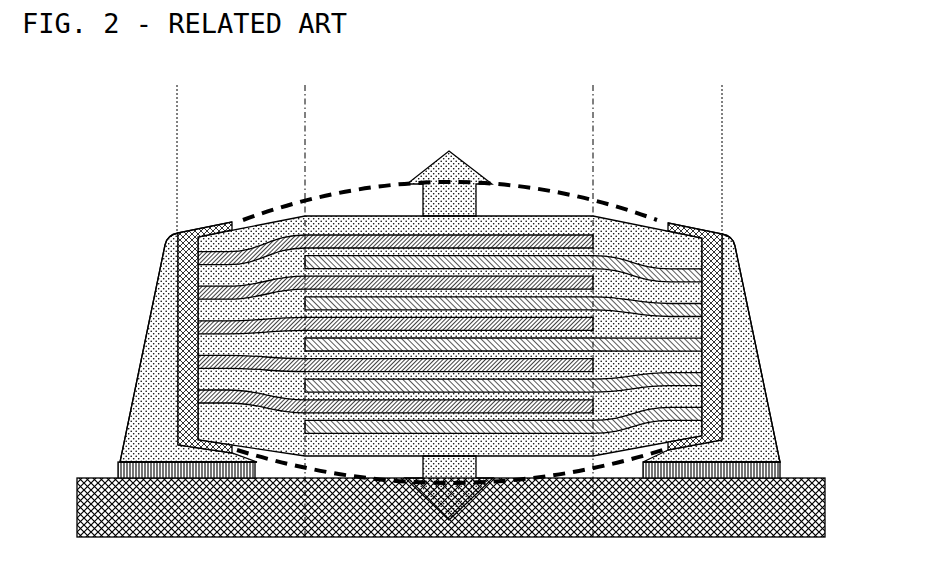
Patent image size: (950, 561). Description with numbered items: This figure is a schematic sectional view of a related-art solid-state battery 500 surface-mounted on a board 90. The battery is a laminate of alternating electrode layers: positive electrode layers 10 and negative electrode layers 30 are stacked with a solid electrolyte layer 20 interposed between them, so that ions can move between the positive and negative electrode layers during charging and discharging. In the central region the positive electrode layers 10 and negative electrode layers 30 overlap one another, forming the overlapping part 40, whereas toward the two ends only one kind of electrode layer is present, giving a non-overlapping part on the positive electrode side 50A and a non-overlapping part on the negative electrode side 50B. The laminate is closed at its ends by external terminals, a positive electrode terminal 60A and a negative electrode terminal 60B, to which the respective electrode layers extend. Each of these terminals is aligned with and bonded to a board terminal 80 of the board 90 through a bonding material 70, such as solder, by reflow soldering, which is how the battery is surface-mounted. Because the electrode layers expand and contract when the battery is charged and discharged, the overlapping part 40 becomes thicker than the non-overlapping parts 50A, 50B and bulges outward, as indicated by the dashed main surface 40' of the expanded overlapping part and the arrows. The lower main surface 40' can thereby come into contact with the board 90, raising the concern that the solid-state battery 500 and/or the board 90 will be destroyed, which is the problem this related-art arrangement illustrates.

The solid-state battery 500 is at (782, 134).
The positive electrode layer 10 is at (690, 272).
The solid electrolyte layer 20 is at (690, 290).
The negative electrode layer 30 is at (575, 323).
The overlapping part 40 is at (449, 311).
The main surface of expanded overlapping part 40' is at (468, 314).
The non-overlapping part on positive electrode side 50A is at (722, 112).
The non-overlapping part on negative electrode side 50B is at (305, 110).
The positive electrode terminal 60A is at (713, 240).
The negative electrode terminal 60B is at (185, 307).
The bonding material 70 is at (755, 440).
The board terminal 80 is at (772, 470).
The board 90 is at (805, 506).